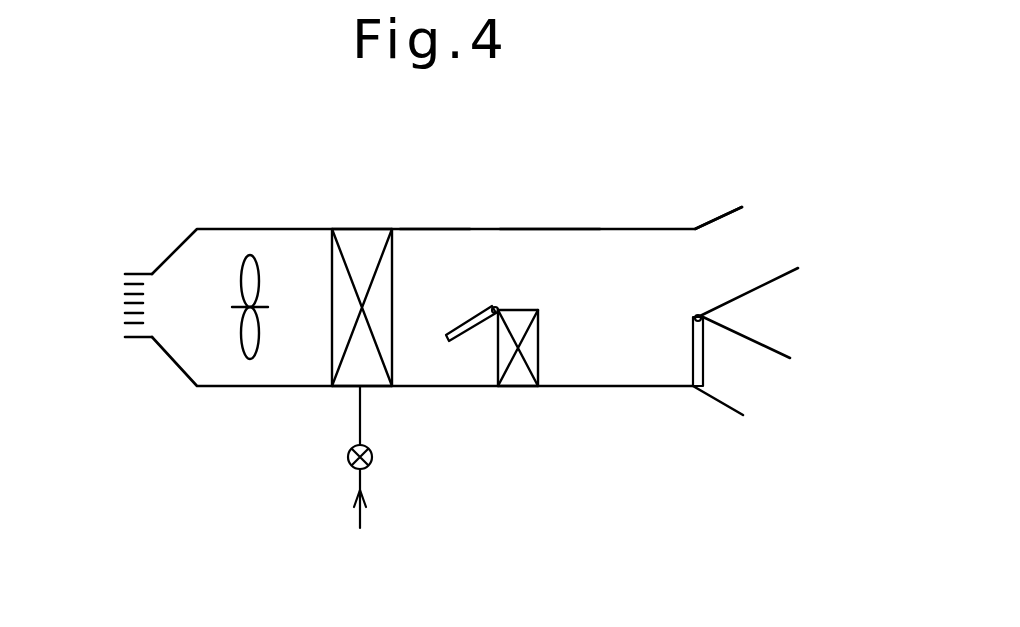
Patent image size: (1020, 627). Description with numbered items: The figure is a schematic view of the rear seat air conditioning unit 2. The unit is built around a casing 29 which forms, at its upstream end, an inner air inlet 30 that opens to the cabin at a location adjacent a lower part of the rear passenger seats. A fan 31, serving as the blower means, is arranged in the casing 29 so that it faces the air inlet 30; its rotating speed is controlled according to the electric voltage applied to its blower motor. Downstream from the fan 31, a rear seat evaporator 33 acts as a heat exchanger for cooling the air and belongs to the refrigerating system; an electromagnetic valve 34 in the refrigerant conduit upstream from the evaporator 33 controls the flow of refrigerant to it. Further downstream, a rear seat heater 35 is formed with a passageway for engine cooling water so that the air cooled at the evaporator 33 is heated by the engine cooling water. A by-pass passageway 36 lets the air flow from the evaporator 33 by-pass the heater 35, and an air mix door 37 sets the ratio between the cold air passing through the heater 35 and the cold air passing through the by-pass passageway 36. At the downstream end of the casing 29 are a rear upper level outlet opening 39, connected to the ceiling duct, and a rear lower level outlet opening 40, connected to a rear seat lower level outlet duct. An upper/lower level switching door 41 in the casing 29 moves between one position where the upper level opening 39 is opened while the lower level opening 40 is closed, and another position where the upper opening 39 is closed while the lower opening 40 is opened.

The rear seat air conditioning unit 2 is at (152, 224).
The casing 29 is at (468, 230).
The inner air inlet 30 is at (119, 309).
The fan 31 is at (258, 268).
The rear seat evaporator 33 is at (363, 238).
The electromagnetic valve 34 is at (348, 457).
The rear seat heater 35 is at (542, 357).
The by-pass passageway 36 is at (552, 258).
The air mix door 37 is at (462, 337).
The rear upper level outlet opening 39 is at (732, 243).
The rear lower level outlet opening 40 is at (733, 377).
The upper/lower level switching door 41 is at (697, 357).